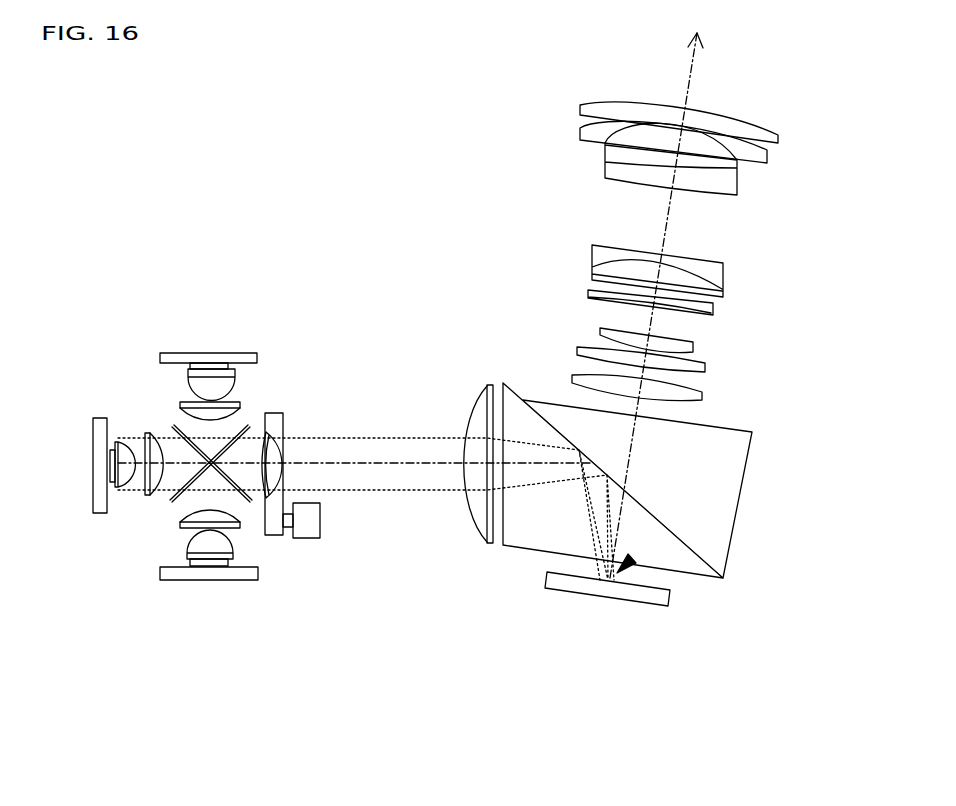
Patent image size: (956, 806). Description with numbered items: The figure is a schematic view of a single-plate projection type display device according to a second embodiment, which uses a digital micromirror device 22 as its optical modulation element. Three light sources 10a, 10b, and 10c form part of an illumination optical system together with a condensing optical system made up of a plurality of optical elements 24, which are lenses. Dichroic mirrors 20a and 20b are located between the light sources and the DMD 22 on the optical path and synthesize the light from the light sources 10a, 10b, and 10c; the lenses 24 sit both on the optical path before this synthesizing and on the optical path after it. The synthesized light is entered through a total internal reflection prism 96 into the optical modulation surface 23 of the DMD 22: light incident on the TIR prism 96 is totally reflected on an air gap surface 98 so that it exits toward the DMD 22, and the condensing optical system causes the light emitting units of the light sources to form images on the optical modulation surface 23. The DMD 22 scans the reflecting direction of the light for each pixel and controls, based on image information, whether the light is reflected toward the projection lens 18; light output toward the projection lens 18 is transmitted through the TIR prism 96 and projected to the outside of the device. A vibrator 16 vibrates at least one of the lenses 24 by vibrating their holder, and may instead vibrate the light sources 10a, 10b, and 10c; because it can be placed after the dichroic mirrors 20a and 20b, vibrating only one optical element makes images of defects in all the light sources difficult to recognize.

The light source 10a is at (105, 418).
The light source 10b is at (223, 352).
The light source 10c is at (177, 580).
The optical element 24 is at (192, 387).
The dichroic mirror 20a is at (195, 444).
The dichroic mirror 20b is at (263, 443).
The digital micromirror device 22 is at (273, 535).
The vibrator 16 is at (308, 540).
The total internal reflection prism 96 is at (680, 557).
The air gap surface 98 is at (640, 504).
The optical modulation surface 23 is at (633, 560).
The projection lens 18 is at (772, 112).